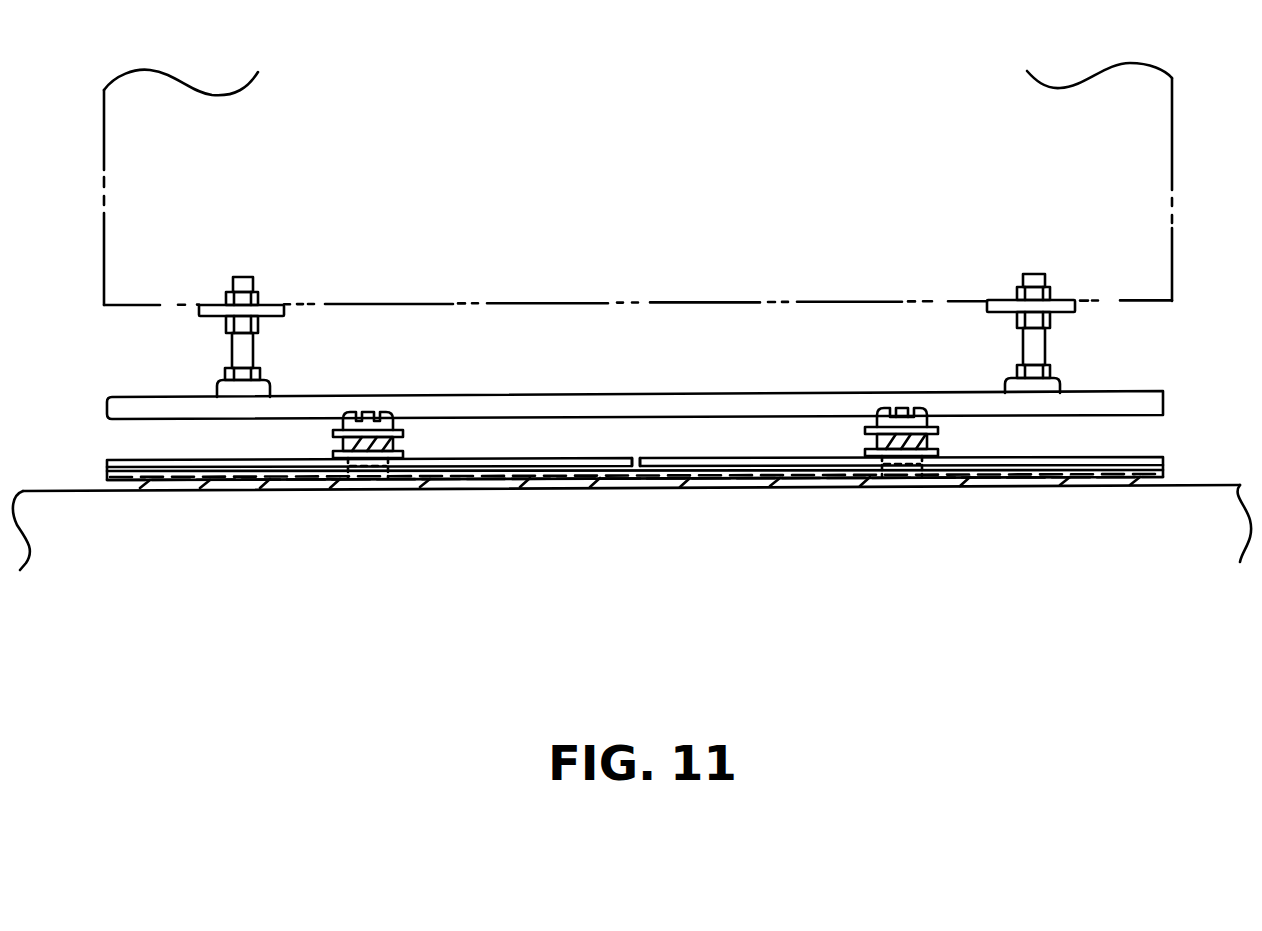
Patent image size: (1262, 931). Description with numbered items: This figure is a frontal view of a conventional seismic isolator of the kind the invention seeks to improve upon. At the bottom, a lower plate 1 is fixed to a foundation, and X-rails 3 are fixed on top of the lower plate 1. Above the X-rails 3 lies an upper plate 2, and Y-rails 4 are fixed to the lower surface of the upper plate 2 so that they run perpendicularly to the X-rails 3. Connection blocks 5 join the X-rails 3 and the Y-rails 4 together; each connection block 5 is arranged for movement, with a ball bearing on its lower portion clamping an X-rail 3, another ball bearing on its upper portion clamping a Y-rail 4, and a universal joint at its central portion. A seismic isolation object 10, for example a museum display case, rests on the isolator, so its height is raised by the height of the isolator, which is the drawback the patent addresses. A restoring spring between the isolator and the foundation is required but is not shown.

The seismic isolation object 10 is at (958, 123).
The upper plate 2 is at (1150, 403).
The lower plate 1 is at (1163, 471).
The X-rails 3 is at (675, 460).
The connection blocks 5 is at (398, 441).
The Y-rails 4 is at (900, 407).